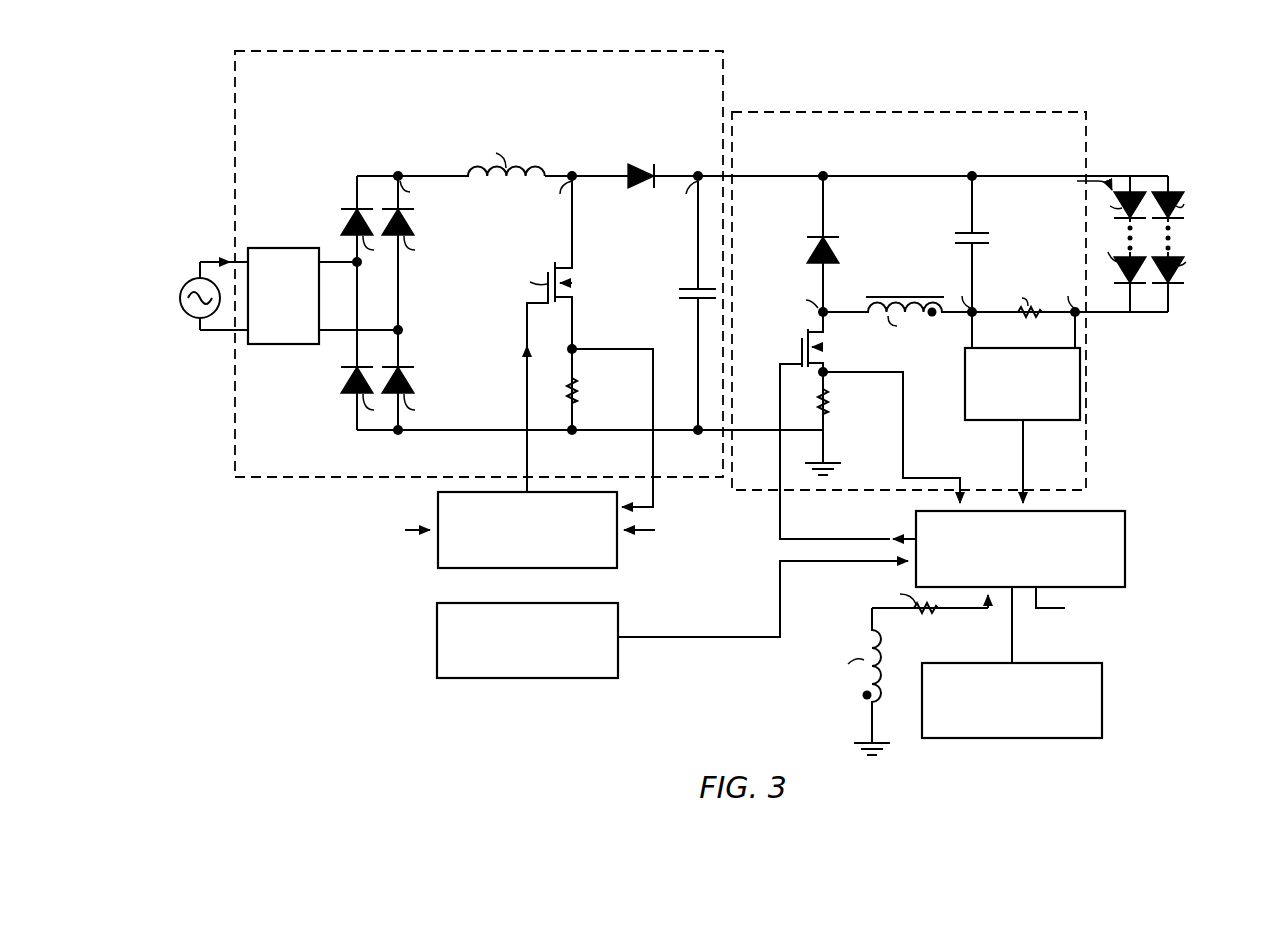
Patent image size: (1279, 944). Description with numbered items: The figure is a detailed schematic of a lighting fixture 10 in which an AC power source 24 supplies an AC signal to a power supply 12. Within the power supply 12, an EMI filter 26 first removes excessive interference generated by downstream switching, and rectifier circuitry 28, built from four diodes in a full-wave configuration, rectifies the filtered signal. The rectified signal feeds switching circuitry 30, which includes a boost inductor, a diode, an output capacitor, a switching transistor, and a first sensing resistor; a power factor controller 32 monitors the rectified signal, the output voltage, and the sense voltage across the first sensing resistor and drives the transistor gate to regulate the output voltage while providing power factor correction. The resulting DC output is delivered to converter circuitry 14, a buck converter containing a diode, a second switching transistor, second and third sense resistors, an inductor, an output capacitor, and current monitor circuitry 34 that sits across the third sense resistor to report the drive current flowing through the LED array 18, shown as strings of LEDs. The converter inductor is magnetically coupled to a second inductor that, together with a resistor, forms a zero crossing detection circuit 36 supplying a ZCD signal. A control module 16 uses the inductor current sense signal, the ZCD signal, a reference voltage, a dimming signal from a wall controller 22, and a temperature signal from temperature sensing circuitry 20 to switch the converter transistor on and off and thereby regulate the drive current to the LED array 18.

The lighting fixture 10 is at (958, 60).
The power supply 12 is at (470, 95).
The converter circuitry 14 is at (898, 155).
The control module 16 is at (1010, 568).
The LED array 18 is at (1198, 160).
The temperature sensing circuitry 20 is at (1002, 731).
The wall controller 22 is at (518, 659).
The AC power source 24 is at (192, 282).
The EMI filter 26 is at (273, 323).
The rectifier circuitry 28 is at (443, 141).
The switching circuitry 30 is at (720, 141).
The power factor controller 32 is at (518, 549).
The current monitor circuitry 34 is at (1012, 415).
The zero crossing detection circuit 36 is at (833, 602).